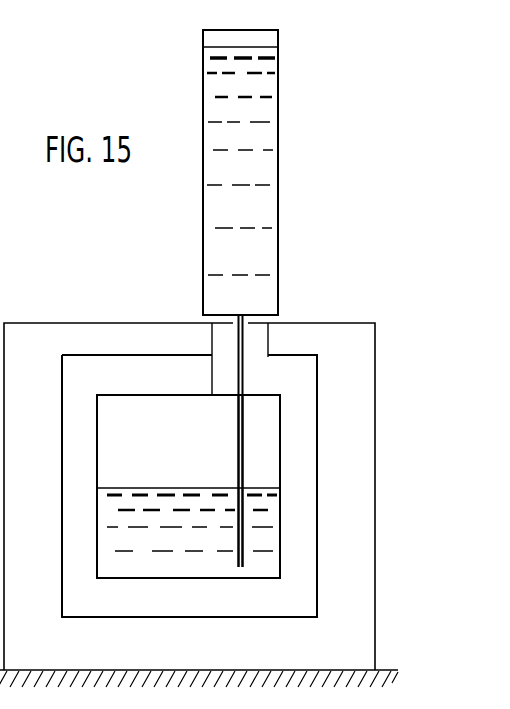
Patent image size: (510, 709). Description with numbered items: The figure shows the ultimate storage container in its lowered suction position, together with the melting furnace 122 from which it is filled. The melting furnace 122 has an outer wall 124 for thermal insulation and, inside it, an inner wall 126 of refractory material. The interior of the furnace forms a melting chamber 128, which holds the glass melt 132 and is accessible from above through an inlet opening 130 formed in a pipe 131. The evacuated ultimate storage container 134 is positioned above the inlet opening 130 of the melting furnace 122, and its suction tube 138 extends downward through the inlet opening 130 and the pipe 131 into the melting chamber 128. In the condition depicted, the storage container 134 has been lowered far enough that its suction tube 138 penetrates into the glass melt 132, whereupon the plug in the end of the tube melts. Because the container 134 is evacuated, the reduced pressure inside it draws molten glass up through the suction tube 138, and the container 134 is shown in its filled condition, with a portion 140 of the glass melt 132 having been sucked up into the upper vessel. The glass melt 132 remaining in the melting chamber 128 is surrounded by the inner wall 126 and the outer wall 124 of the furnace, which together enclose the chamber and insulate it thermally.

The melting furnace 122 is at (404, 642).
The outer wall 124 is at (355, 509).
The inner wall 126 is at (305, 568).
The melting chamber 128 is at (258, 466).
The inlet opening 130 is at (245, 326).
The pipe 131 is at (268, 351).
The glass melt 132 is at (110, 517).
The ultimate storage container 134 is at (268, 241).
The suction tube 138 is at (243, 421).
The portion of the glass melt 140 is at (268, 167).